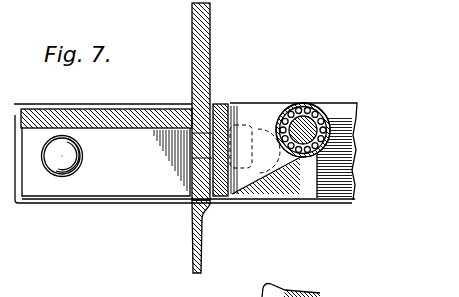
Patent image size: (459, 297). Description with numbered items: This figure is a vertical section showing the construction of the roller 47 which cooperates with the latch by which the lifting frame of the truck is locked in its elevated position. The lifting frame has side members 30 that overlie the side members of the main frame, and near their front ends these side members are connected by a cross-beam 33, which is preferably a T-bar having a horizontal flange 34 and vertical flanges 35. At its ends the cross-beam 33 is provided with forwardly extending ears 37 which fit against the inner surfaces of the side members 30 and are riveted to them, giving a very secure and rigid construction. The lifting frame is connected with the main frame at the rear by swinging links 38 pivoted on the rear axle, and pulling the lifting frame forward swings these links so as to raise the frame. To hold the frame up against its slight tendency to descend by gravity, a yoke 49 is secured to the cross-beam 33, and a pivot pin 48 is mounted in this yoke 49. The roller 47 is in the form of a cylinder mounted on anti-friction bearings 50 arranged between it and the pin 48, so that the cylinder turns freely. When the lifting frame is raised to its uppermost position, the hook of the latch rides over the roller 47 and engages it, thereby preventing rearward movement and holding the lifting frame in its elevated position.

The side member of the lifting frame 30 is at (352, 190).
The cross-beam 33 is at (212, 88).
The horizontal flange 34 is at (85, 119).
The vertical flange 35 is at (212, 23).
The forwardly extending ear 37 is at (37, 199).
The swinging link 38 is at (192, 261).
The roller 47 is at (305, 129).
The pivot pin 48 is at (331, 120).
The yoke 49 is at (257, 99).
The anti-friction bearings 50 is at (304, 113).